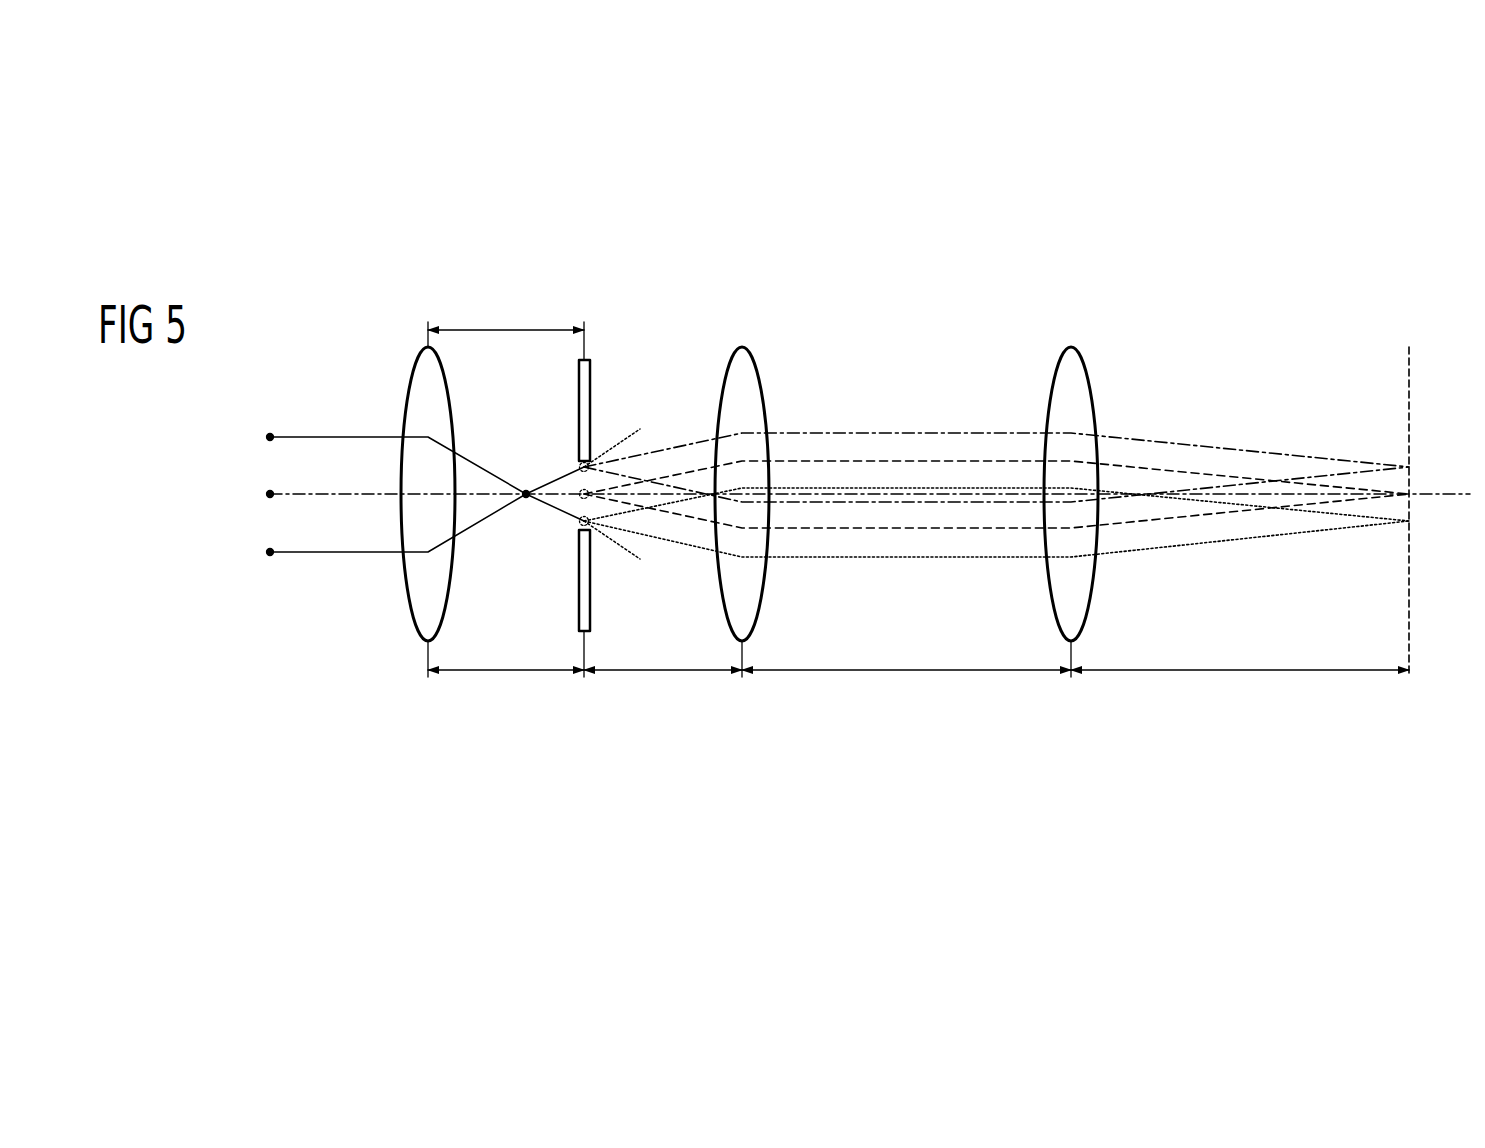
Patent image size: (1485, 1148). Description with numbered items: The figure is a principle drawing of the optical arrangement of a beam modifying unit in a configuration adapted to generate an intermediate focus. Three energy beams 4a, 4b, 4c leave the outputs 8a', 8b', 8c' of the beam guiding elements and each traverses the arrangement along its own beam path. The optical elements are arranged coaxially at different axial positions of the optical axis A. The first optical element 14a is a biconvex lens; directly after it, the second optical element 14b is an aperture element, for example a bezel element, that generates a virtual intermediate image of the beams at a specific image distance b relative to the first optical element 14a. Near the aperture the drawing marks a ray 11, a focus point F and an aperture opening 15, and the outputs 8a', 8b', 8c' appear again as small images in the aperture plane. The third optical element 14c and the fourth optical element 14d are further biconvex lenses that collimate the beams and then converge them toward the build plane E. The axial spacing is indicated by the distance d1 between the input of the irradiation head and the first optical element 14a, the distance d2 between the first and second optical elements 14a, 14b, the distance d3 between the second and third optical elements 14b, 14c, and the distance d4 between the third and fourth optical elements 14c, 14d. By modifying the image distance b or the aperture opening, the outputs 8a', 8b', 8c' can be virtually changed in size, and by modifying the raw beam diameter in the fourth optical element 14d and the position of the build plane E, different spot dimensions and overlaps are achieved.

The first optical element 14a is at (447, 384).
The second optical element 14b is at (592, 374).
The third optical element 14c is at (762, 374).
The fourth optical element 14d is at (1091, 375).
The output of beam guiding element 8a' is at (420, 477).
The output of beam guiding element 8b' is at (441, 452).
The output of beam guiding element 8c' is at (420, 504).
The light ray 11 is at (559, 479).
The pinhole aperture 15 is at (599, 548).
The energy beam 4a is at (925, 432).
The energy beam 4b is at (983, 460).
The energy beam 4c is at (922, 560).
The focal point F is at (520, 506).
The build plane E is at (1410, 376).
The optical axis A is at (1456, 497).
The image distance b is at (506, 317).
The distance d1 is at (506, 688).
The distance d2 is at (663, 688).
The distance d3 is at (906, 688).
The distance d4 is at (1240, 688).